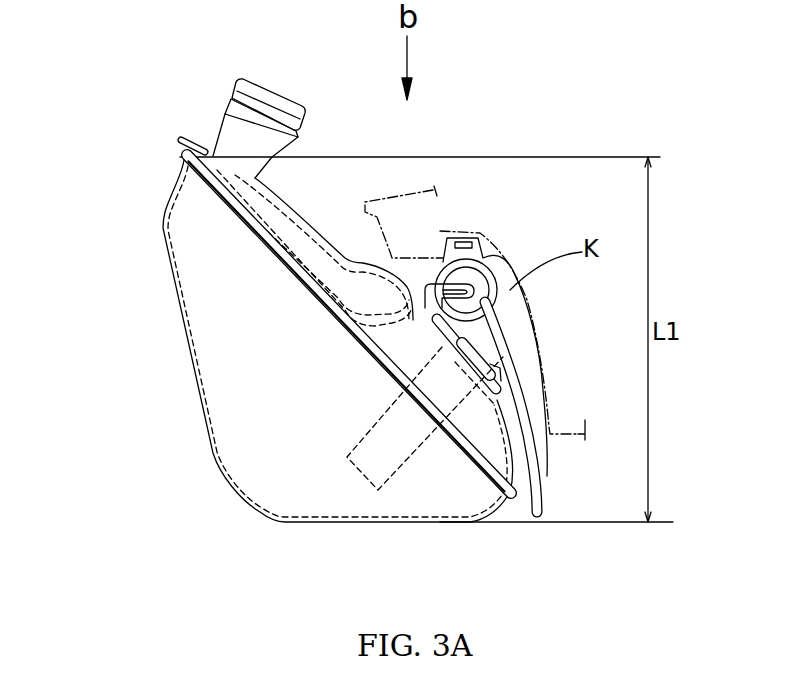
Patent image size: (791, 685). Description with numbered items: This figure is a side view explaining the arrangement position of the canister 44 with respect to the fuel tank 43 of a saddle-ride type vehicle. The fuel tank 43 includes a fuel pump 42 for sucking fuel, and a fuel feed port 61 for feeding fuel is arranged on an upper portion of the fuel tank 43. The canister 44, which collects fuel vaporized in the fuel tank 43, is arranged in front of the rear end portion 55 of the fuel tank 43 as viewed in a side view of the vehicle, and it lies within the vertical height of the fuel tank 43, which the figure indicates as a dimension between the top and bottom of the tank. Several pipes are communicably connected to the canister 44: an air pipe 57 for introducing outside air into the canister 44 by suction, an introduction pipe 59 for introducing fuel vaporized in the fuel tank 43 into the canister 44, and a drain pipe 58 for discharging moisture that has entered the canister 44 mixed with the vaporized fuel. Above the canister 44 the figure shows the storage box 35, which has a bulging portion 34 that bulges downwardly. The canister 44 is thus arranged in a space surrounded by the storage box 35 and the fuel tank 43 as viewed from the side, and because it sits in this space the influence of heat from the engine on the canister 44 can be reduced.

The fuel feed port 61 is at (275, 86).
The introduction pipe 59 is at (310, 228).
The air pipe 57 is at (445, 256).
The canister 44 is at (499, 260).
The storage box 35 is at (548, 309).
The bulging portion 34 is at (585, 440).
The fuel pump 42 is at (498, 405).
The fuel tank 43 is at (293, 523).
The rear end portion 55 is at (527, 518).
The drain pipe 58 is at (537, 481).